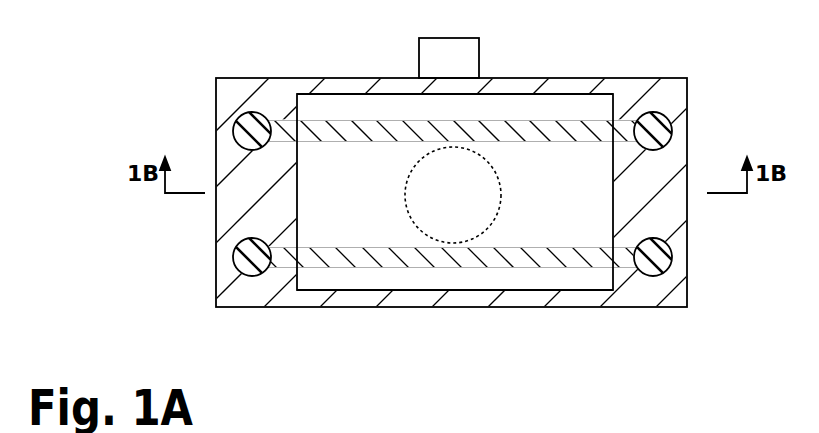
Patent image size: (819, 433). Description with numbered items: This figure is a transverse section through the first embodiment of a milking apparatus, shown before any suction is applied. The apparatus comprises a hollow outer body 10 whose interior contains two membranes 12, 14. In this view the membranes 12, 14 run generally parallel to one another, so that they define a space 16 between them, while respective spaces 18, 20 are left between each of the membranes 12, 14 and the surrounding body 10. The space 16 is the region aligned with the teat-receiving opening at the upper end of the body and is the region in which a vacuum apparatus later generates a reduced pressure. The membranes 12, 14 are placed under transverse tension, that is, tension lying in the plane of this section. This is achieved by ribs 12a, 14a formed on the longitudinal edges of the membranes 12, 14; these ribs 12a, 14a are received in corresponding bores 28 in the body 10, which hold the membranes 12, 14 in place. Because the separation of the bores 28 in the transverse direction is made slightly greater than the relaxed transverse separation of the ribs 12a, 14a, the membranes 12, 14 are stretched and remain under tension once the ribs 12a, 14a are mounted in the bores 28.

The outer body 10 is at (249, 78).
The membrane 12 is at (550, 137).
The rib 12a is at (250, 115).
The membrane 14 is at (557, 267).
The rib 14a is at (247, 276).
The space 16 is at (572, 233).
The space 18 is at (376, 100).
The space 20 is at (420, 282).
The bore 28 is at (217, 127).